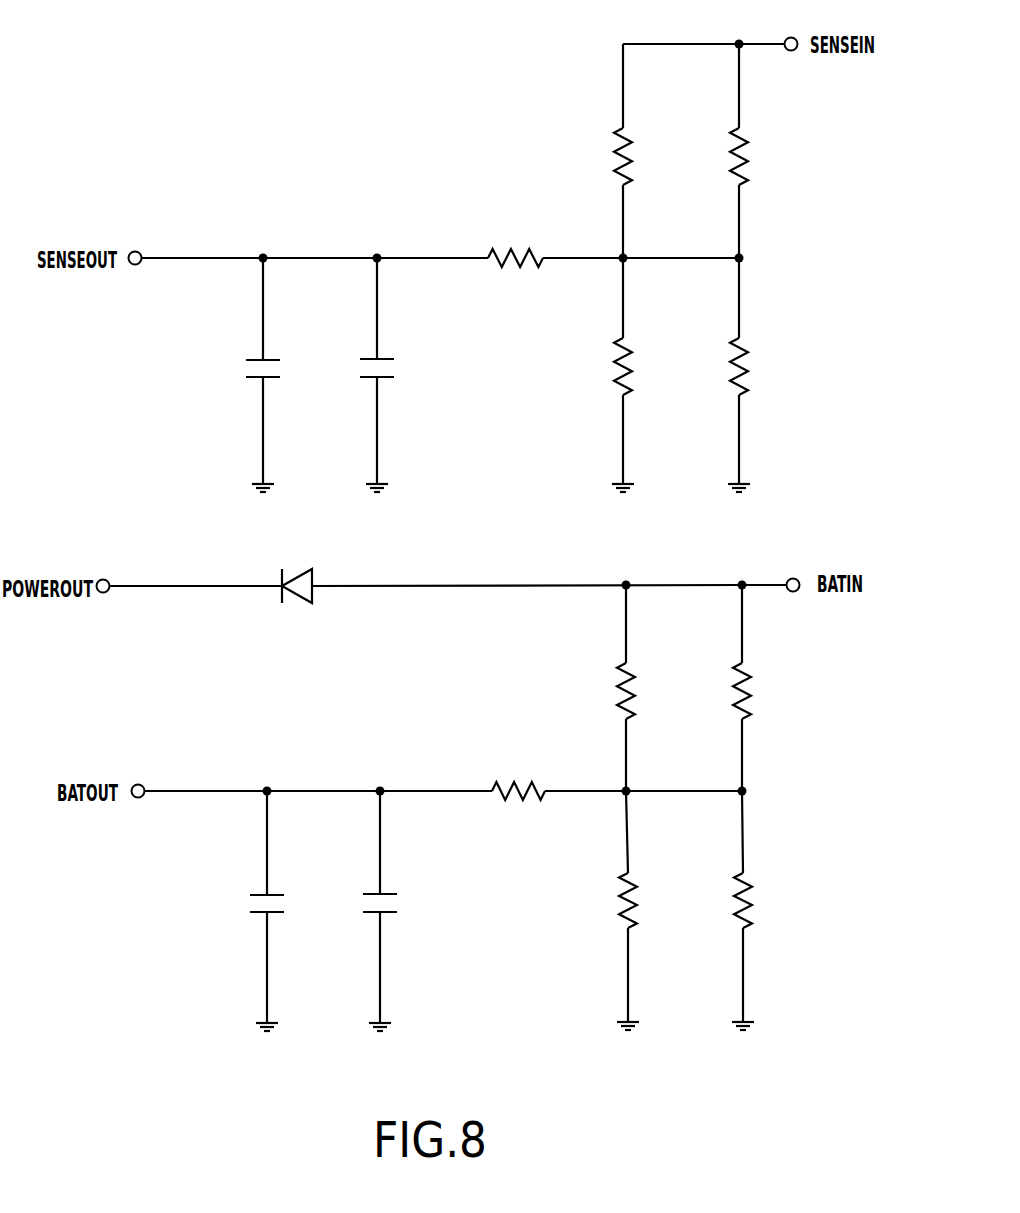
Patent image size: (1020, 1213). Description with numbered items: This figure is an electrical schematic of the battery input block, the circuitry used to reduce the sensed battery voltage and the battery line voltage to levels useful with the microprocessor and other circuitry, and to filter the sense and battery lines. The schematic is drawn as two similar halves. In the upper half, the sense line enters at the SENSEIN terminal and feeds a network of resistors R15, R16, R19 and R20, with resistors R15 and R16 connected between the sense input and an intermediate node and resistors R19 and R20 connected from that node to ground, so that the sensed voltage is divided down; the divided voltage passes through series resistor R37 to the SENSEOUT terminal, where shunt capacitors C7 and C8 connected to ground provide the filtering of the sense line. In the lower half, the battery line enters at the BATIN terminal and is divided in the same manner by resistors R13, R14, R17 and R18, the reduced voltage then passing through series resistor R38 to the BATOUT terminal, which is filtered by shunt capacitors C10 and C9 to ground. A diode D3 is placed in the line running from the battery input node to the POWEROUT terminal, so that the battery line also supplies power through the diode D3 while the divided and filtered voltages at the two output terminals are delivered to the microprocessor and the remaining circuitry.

The resistor 392K R15 is at (651, 159).
The resistor 392K R16 is at (765, 159).
The resistor 63.4K R19 is at (653, 366).
The resistor 63.4K R20 is at (768, 366).
The resistor 63.4K R37 is at (515, 286).
The capacitor 0.1 microfarad C7 is at (288, 371).
The capacitor 0.1 microfarad C8 is at (400, 371).
The diode 1N414B D3 is at (296, 557).
The resistor 392K R13 is at (654, 693).
The resistor 392K R14 is at (768, 693).
The resistor 63.4K R17 is at (657, 900).
The resistor 63.4K R18 is at (771, 900).
The resistor 63.4K R38 is at (518, 819).
The capacitor 0.1 microfarad C10 is at (291, 907).
The capacitor 0.1 microfarad C9 is at (402, 907).